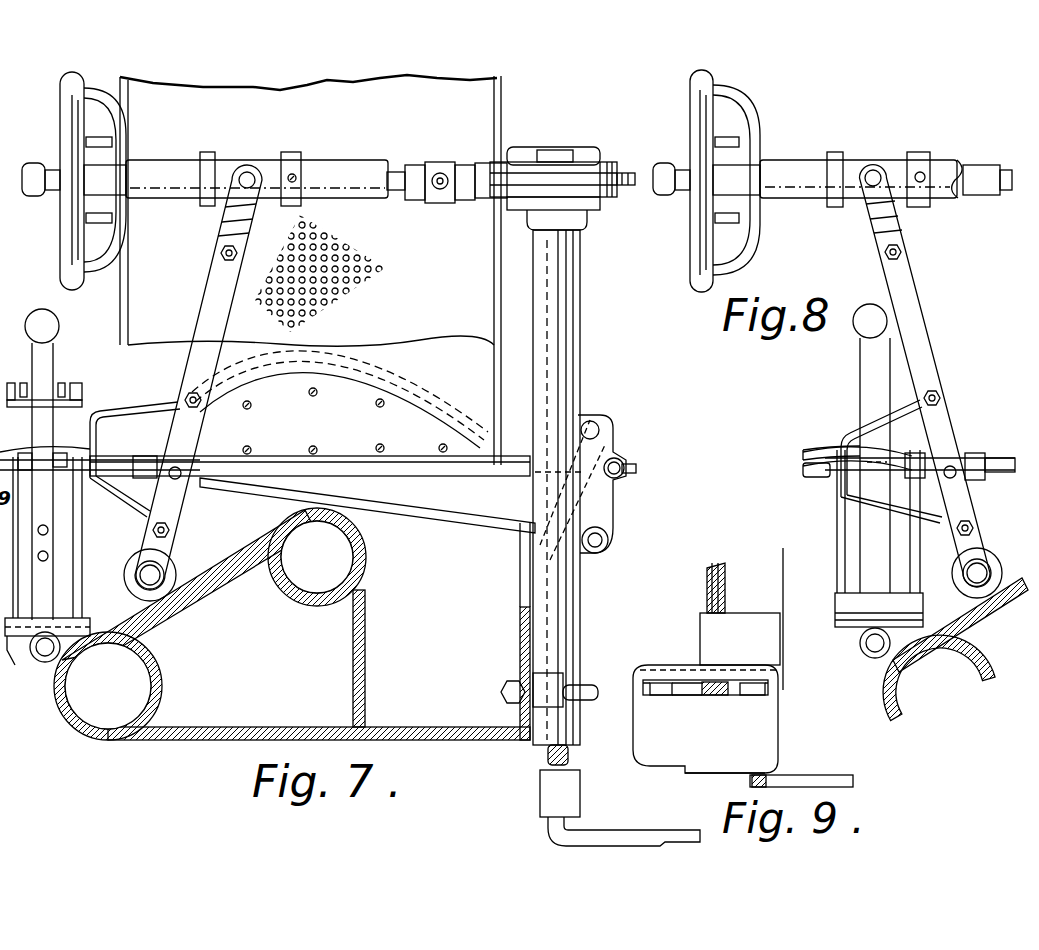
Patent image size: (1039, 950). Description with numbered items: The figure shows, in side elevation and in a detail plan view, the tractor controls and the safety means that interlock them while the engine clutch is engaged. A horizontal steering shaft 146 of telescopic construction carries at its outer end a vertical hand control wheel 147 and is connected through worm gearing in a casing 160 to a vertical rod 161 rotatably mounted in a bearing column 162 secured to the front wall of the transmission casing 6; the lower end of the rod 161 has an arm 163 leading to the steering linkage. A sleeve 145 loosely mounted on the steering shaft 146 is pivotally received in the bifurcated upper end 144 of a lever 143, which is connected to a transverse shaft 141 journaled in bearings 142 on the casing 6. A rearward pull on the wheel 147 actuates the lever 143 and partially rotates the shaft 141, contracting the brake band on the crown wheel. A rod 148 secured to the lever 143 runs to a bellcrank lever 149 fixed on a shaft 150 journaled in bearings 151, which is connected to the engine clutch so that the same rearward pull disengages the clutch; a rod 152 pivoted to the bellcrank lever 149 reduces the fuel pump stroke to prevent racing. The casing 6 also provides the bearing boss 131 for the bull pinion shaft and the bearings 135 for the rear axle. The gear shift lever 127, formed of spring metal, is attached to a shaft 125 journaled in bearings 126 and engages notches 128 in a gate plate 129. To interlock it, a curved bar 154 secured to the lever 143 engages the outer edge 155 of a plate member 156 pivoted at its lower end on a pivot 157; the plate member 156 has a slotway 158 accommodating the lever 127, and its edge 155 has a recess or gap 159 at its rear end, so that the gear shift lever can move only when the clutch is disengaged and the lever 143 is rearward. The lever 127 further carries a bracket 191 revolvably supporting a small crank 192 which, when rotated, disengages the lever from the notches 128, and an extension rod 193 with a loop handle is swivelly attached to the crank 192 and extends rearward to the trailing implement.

In FIG. 7, the transmission casing 6 is at (319, 631).
In FIG. 9, the transmission casing 6 is at (780, 587).
In FIG. 7, the shaft 125 is at (50, 650).
In FIG. 8, the shaft 125 is at (882, 650).
In FIG. 9, the shaft 125 is at (725, 585).
In FIG. 9, the bearings 126 is at (700, 612).
In FIG. 7, the gear shift lever 127 is at (50, 355).
In FIG. 8, the gear shift lever 127 is at (860, 368).
In FIG. 9, the gear shift lever 127 is at (703, 693).
In FIG. 7, the notches 128 is at (0, 470).
In FIG. 8, the notches 128 is at (823, 478).
In FIG. 9, the notches 128 is at (640, 680).
In FIG. 7, the gate plate 129 is at (77, 455).
In FIG. 8, the gate plate 129 is at (805, 466).
In FIG. 9, the gate plate 129 is at (692, 685).
In FIG. 7, the bearing boss 131 is at (317, 557).
In FIG. 7, the bearings 135 is at (133, 697).
In FIG. 7, the transverse shaft 141 is at (165, 580).
In FIG. 8, the transverse shaft 141 is at (983, 587).
In FIG. 7, the bearings 142 is at (177, 560).
In FIG. 7, the lever 143 is at (213, 293).
In FIG. 8, the lever 143 is at (907, 300).
In FIG. 7, the upper end 144 is at (222, 222).
In FIG. 8, the upper end 144 is at (870, 213).
In FIG. 7, the sleeve 145 is at (233, 160).
In FIG. 8, the sleeve 145 is at (873, 160).
In FIG. 7, the steering shaft 146 is at (357, 167).
In FIG. 8, the steering shaft 146 is at (967, 160).
In FIG. 7, the hand control wheel 147 is at (80, 278).
In FIG. 8, the hand control wheel 147 is at (698, 247).
In FIG. 7, the rod 148 is at (423, 513).
In FIG. 7, the bellcrank lever 149 is at (595, 493).
In FIG. 7, the shaft 150 is at (590, 433).
In FIG. 7, the bearings 151 is at (610, 462).
In FIG. 7, the rod 152 is at (636, 470).
In FIG. 7, the curved bar 154 is at (153, 407).
In FIG. 8, the curved bar 154 is at (850, 427).
In FIG. 9, the curved bar 154 is at (828, 775).
In FIG. 8, the outer edge 155 is at (917, 447).
In FIG. 9, the outer edge 155 is at (700, 778).
In FIG. 7, the plate member 156 is at (45, 435).
In FIG. 8, the plate member 156 is at (823, 447).
In FIG. 9, the plate member 156 is at (745, 695).
In FIG. 7, the pivot 157 is at (7, 640).
In FIG. 8, the pivot 157 is at (840, 613).
In FIG. 9, the slotway 158 is at (660, 683).
In FIG. 9, the recess or gap 159 is at (672, 775).
In FIG. 7, the casing 160 is at (563, 170).
In FIG. 7, the vertical rod 161 is at (545, 757).
In FIG. 7, the bearing column 162 is at (580, 313).
In FIG. 7, the arm 163 is at (560, 836).
In FIG. 7, the bracket 191 is at (83, 403).
In FIG. 7, the crank 192 is at (72, 383).
In FIG. 7, the extension rod 193 is at (32, 371).